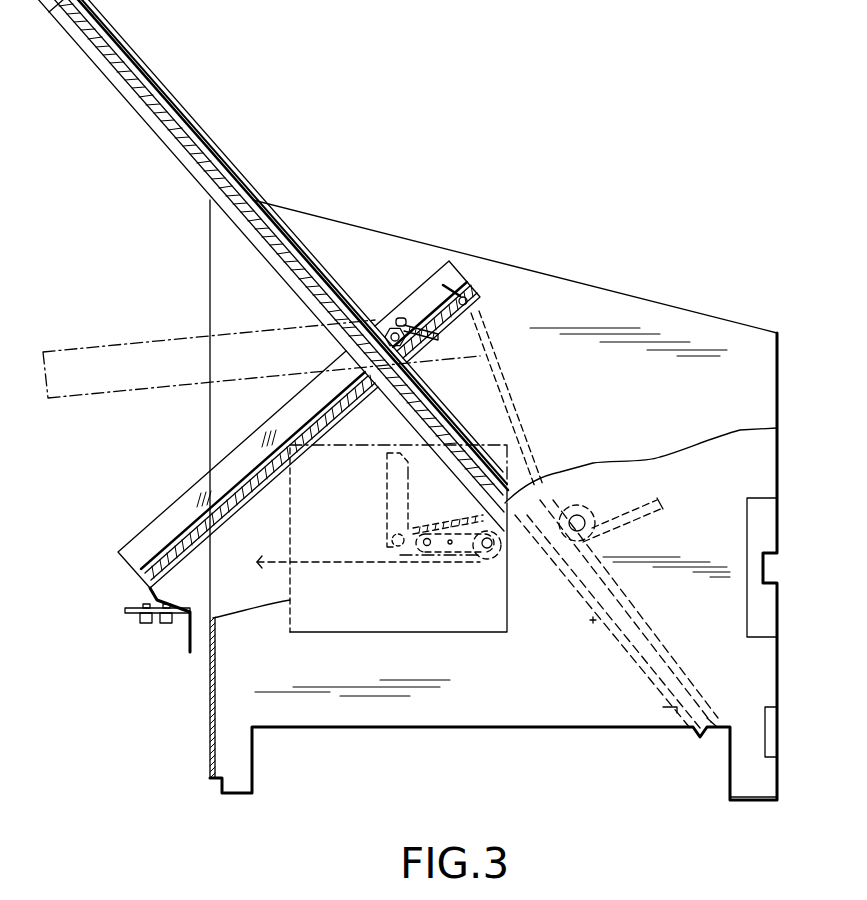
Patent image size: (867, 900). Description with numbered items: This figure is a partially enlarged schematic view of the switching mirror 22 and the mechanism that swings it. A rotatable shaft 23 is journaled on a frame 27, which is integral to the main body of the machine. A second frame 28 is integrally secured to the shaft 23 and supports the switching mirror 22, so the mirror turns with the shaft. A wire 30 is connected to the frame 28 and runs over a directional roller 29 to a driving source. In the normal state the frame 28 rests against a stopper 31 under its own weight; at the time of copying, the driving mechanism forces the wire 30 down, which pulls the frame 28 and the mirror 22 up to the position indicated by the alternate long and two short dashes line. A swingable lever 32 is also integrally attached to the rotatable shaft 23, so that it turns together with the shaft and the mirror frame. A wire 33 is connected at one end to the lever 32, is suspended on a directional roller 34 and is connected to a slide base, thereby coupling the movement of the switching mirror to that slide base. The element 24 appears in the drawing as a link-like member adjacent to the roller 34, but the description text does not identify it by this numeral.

The switching mirror 22 is at (263, 468).
The rotatable shaft 23 is at (393, 327).
The link 24 is at (587, 627).
The frame 27 is at (208, 688).
The frame 28 is at (430, 293).
The directional roller 29 is at (590, 512).
The wire 30 is at (518, 398).
The stopper 31 is at (163, 595).
The swingable lever 32 is at (386, 498).
The wire 33 is at (373, 568).
The directional roller 34 is at (490, 568).